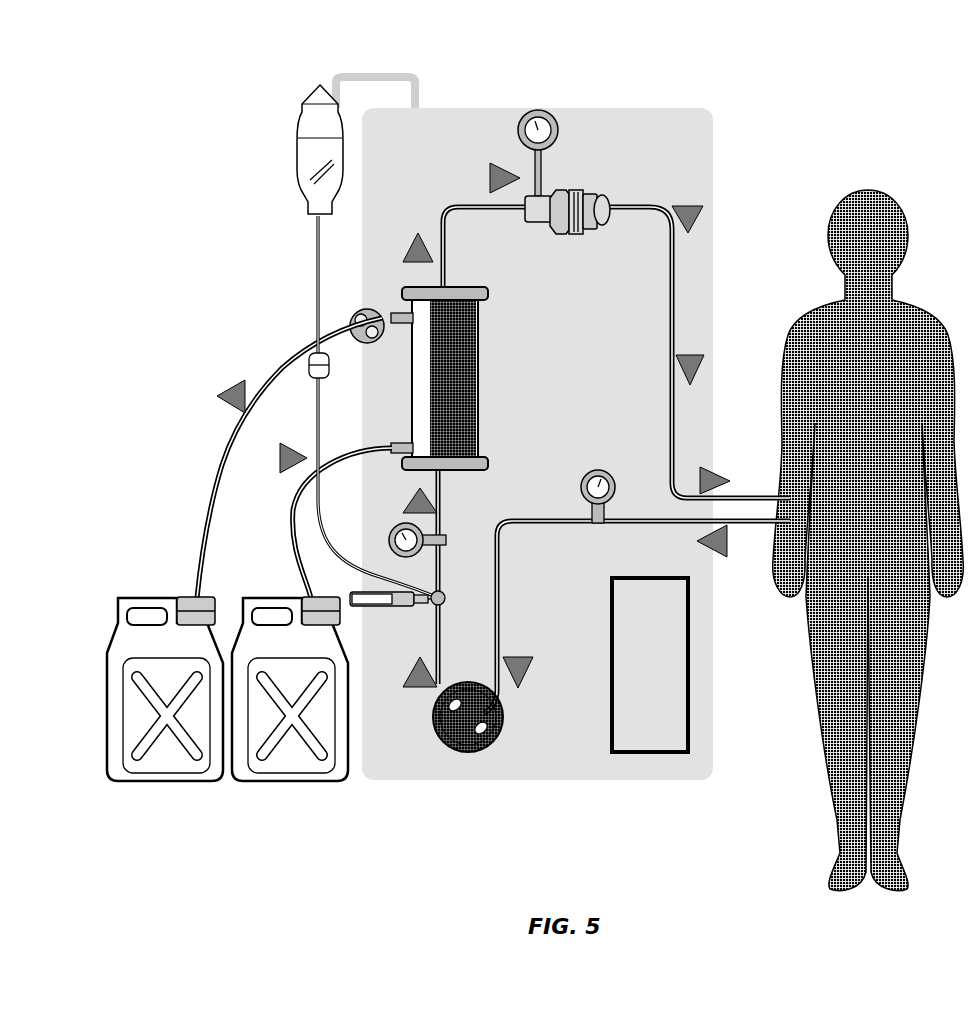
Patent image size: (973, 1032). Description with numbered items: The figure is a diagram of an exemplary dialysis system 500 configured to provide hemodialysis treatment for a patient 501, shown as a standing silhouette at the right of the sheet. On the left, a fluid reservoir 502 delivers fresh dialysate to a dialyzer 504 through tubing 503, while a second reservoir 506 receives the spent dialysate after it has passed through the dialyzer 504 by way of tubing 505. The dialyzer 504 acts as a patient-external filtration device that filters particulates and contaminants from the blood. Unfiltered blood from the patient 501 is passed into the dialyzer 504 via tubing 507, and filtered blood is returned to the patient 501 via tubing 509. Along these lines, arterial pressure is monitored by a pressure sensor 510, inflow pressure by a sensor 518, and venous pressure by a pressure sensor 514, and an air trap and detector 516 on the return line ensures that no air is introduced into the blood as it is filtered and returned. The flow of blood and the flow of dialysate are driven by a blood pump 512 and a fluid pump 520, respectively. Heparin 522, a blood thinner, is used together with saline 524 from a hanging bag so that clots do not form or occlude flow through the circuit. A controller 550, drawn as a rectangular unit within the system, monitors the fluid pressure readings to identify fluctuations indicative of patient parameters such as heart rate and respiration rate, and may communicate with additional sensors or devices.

The dialysis system 500 is at (257, 70).
The patient 501 is at (868, 540).
The fluid reservoir 502 is at (165, 689).
The tubing 503 is at (226, 381).
The dialyzer 504 is at (468, 378).
The tubing 505 is at (280, 457).
The reservoir 506 is at (290, 689).
The tubing 507 is at (716, 565).
The tubing 509 is at (706, 200).
The pressure sensor 510 is at (598, 523).
The blood pump 512 is at (464, 753).
The pressure sensor 514 is at (560, 118).
The air trap and detector 516 is at (580, 185).
The sensor 518 is at (389, 540).
The fluid pump 520 is at (355, 311).
The heparin 522 is at (437, 606).
The saline 524 is at (292, 155).
The controller 550 is at (679, 753).